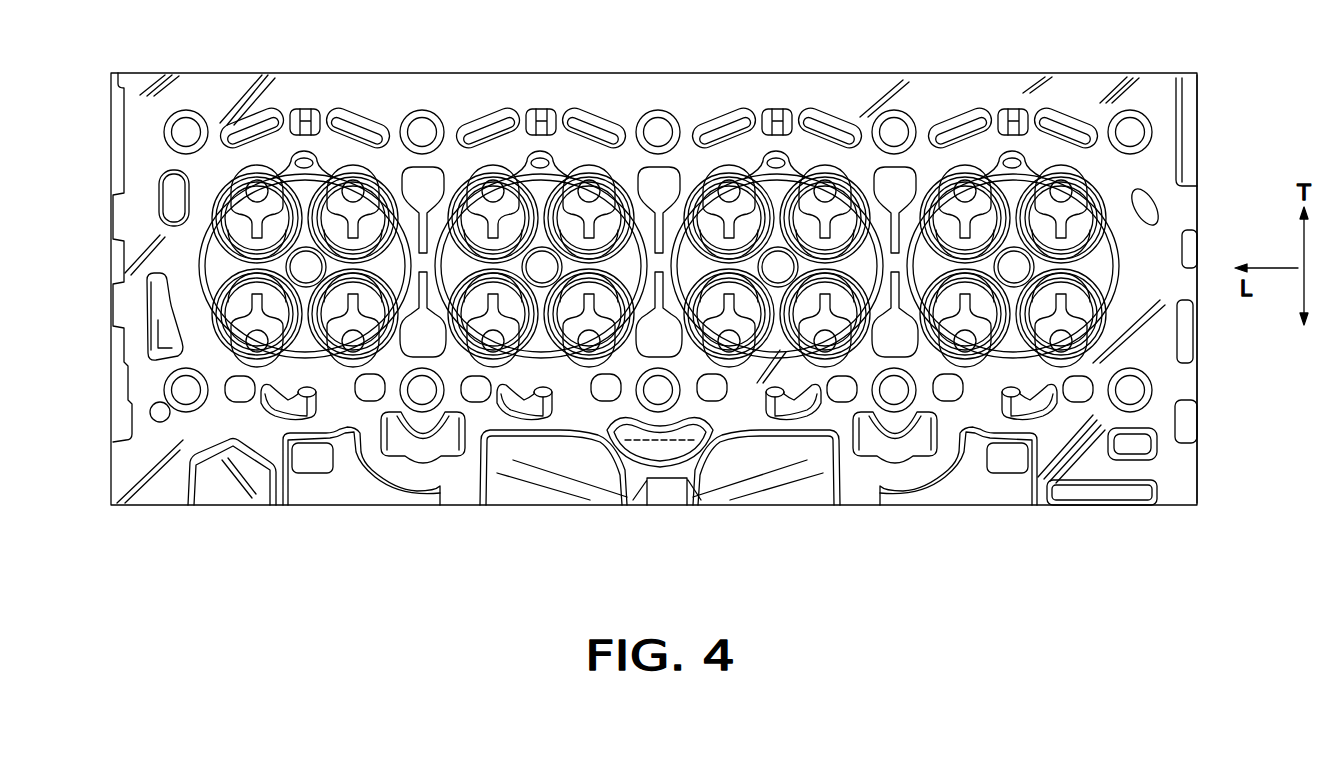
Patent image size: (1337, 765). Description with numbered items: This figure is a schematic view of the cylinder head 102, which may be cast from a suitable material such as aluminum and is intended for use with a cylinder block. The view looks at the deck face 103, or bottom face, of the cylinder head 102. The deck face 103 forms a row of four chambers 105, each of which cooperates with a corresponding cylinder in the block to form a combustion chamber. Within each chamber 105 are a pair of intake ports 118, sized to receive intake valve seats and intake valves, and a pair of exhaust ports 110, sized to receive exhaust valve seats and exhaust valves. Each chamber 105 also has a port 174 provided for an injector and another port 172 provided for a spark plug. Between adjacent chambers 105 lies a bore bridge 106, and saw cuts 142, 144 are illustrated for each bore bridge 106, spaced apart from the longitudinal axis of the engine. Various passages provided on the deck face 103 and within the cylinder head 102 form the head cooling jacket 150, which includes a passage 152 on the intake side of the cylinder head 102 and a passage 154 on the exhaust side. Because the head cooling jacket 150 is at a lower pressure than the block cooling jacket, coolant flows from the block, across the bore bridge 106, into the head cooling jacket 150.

The cylinder head 102 is at (1220, 140).
The deck face 103 is at (1198, 352).
The chamber 105 is at (212, 269).
The bore bridge 106 is at (428, 262).
The exhaust ports 110 is at (240, 320).
The intake ports 118 is at (257, 190).
The saw cut 142 is at (465, 212).
The saw cut 144 is at (605, 343).
The head cooling jacket 150 is at (664, 165).
The passage 152 is at (446, 167).
The passage 154 is at (437, 297).
The port for spark plug 172 is at (305, 267).
The port for injector 174 is at (300, 158).